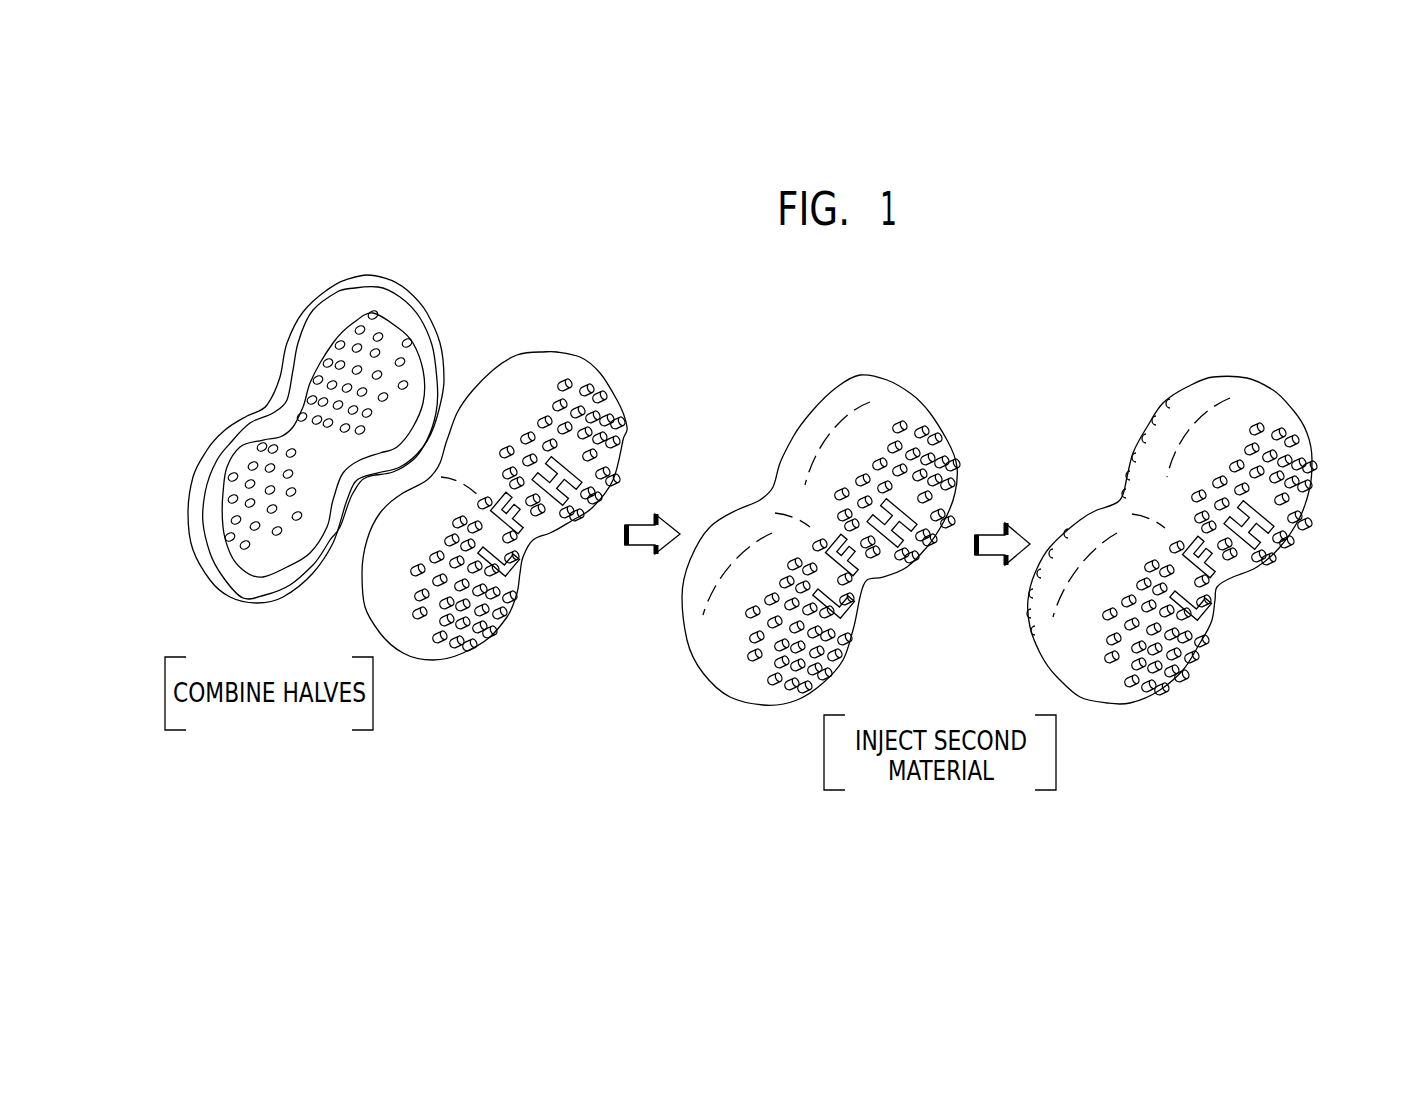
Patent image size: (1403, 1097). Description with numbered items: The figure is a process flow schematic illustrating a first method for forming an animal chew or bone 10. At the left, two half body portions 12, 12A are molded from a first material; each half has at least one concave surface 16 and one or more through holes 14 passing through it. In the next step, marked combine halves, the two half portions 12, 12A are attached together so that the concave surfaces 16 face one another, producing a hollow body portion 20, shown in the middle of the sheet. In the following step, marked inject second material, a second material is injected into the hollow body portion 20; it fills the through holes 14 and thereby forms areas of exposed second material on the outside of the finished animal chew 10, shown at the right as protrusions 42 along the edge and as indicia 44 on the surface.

The animal chew 10 is at (1195, 505).
The half body portion 12 is at (542, 522).
The half body portion 12A is at (286, 359).
The through holes 14 is at (408, 342).
The concave surface 16 is at (327, 450).
The hollow body portion 20 is at (817, 427).
The protrusions 42 is at (1142, 433).
The indicia 44 is at (1214, 562).